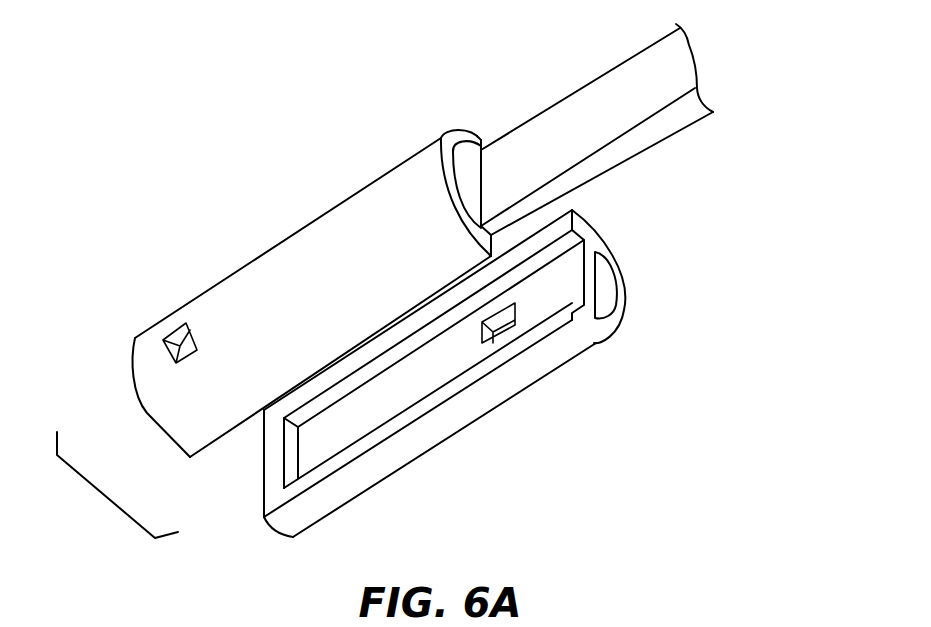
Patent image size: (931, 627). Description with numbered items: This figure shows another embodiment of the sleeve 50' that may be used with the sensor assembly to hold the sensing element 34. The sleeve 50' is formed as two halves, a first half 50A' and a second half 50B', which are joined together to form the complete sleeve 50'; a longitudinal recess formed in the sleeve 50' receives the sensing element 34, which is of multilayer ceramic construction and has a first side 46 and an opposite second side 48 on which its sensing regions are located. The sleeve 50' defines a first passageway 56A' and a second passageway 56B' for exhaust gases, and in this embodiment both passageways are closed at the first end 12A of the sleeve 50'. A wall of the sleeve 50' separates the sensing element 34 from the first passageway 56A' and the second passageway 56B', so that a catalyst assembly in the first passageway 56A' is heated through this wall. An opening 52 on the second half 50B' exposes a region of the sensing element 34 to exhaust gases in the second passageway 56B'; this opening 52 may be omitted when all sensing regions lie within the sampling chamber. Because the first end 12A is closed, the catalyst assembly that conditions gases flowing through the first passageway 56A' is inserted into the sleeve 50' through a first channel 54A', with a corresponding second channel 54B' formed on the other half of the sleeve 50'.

The first end 12A is at (102, 379).
The sensing element 34 is at (566, 110).
The first side 46 is at (642, 70).
The second side 48 is at (690, 128).
The sleeve 50' is at (386, 318).
The first half 50A' is at (314, 266).
The second half 50B' is at (450, 371).
The opening 52 is at (500, 323).
The first channel 54A' is at (503, 151).
The second engaging lip 54B' is at (645, 262).
The first passageway 56A' is at (456, 165).
The second passageway 56B' is at (644, 276).